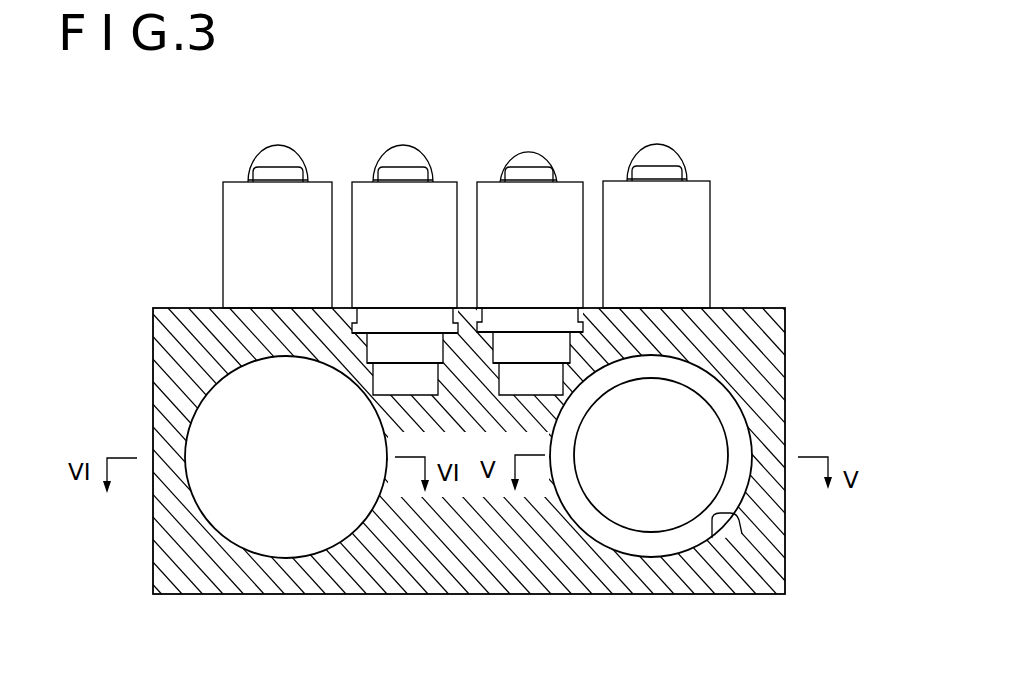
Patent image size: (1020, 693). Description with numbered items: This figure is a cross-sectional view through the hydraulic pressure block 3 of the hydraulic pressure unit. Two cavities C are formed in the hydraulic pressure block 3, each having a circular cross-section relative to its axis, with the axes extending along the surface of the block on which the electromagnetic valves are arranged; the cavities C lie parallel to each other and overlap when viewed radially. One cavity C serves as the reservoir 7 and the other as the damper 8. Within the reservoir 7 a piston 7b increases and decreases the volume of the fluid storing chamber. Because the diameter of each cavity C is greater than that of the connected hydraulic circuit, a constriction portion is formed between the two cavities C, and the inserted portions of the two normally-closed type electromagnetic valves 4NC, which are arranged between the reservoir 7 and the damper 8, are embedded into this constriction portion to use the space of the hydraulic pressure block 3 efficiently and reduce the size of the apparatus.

The hydraulic pressure block 3 is at (775, 350).
The normally-closed type electromagnetic valve 4NC is at (490, 198).
The reservoir 7 is at (652, 544).
The piston 7b is at (735, 419).
The damper 8 is at (286, 558).
The cavity C is at (727, 540).